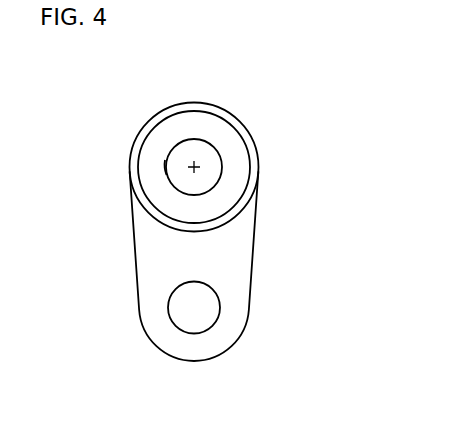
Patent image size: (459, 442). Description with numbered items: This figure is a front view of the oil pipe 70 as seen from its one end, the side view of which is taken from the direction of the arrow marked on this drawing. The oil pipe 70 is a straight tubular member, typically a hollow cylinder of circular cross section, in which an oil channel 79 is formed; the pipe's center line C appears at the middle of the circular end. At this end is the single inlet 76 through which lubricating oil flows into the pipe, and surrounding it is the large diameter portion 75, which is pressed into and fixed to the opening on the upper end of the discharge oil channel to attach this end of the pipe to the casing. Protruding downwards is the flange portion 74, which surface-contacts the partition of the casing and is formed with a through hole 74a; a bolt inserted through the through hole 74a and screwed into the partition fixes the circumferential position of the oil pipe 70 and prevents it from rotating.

The oil pipe 70 is at (254, 94).
The flange portion 74 is at (238, 256).
The through hole 74a is at (207, 307).
The large diameter portion 75 is at (150, 125).
The inlet 76 is at (185, 183).
The oil channel 79 is at (168, 176).
The center line C is at (194, 167).